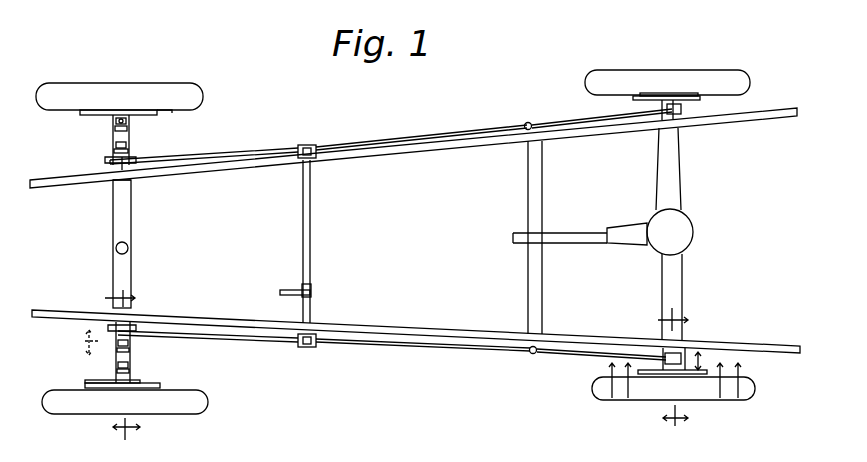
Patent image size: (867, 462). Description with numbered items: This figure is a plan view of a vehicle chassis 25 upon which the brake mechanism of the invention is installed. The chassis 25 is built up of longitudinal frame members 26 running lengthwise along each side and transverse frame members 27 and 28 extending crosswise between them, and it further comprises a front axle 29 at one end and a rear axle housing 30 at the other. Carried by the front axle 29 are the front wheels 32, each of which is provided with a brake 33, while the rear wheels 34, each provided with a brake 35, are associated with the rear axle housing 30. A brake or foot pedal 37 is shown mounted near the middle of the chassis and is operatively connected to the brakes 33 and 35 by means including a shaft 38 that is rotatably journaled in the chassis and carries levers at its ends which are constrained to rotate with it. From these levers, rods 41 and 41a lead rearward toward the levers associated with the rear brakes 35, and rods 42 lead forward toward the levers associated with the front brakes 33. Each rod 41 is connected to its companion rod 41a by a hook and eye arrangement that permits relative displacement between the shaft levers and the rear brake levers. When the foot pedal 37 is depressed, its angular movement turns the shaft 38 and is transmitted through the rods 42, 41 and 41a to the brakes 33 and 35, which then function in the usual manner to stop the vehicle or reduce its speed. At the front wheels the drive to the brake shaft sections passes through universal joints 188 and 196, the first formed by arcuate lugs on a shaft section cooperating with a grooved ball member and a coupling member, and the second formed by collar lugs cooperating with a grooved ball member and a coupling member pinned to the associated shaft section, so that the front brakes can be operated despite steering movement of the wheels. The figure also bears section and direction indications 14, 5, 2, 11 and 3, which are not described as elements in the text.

The chassis 25 is at (729, 121).
The transverse frame member 27 is at (133, 232).
The front axle 29 is at (133, 185).
The shaft 38 is at (309, 273).
The brake or foot pedal 37 is at (283, 291).
The transverse frame member 28 is at (531, 283).
The rear axle housing 30 is at (668, 276).
The front wheel 32 is at (158, 90).
The brake 33 is at (168, 108).
The universal joint 188 is at (114, 126).
The universal joint 196 is at (113, 151).
The longitudinal frame member 26 is at (389, 146).
The rod 42 is at (246, 150).
The rod 41a is at (470, 127).
The rod 41 is at (590, 121).
The rear wheel 34 is at (628, 64).
The brake 35 is at (688, 93).
The axis line 14 is at (114, 367).
The axis line 5 is at (393, 350).
The axis line 2 is at (671, 381).
The axis line 11 is at (647, 408).
The axis line 3 is at (673, 369).